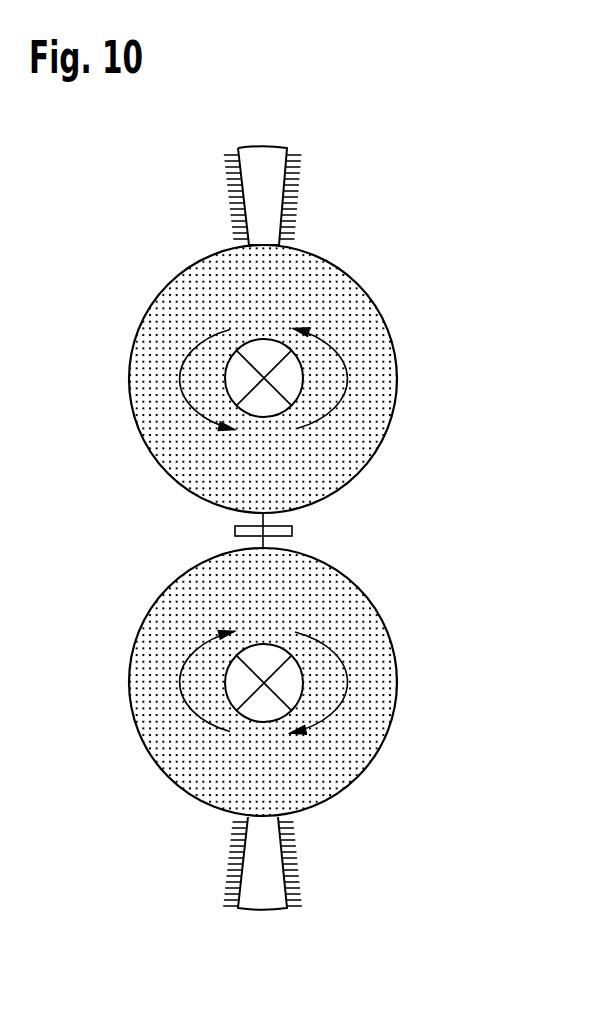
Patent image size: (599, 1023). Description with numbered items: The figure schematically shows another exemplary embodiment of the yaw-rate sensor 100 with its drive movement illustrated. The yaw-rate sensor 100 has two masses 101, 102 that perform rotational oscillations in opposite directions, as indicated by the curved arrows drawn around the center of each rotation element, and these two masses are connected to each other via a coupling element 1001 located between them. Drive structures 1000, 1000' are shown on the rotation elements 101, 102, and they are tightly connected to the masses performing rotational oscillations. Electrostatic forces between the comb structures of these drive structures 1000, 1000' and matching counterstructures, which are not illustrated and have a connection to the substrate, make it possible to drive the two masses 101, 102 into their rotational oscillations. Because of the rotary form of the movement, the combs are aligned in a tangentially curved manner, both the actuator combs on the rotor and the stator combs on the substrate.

The yaw-rate sensor 100 is at (503, 284).
The drive structure 1000 is at (343, 195).
The drive structure 1000' is at (347, 863).
The mass 101 is at (382, 345).
The mass 102 is at (383, 650).
The coupling element 1001 is at (277, 531).